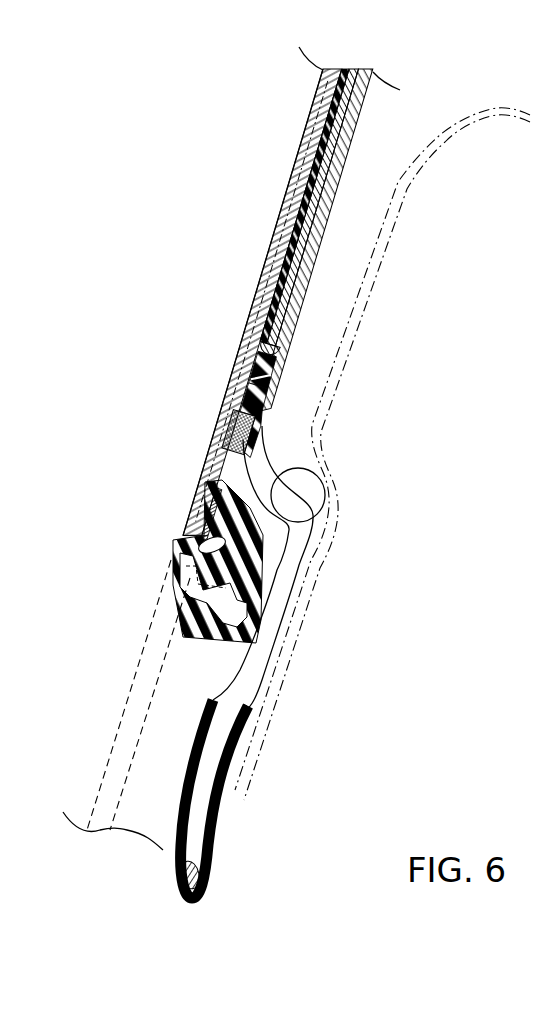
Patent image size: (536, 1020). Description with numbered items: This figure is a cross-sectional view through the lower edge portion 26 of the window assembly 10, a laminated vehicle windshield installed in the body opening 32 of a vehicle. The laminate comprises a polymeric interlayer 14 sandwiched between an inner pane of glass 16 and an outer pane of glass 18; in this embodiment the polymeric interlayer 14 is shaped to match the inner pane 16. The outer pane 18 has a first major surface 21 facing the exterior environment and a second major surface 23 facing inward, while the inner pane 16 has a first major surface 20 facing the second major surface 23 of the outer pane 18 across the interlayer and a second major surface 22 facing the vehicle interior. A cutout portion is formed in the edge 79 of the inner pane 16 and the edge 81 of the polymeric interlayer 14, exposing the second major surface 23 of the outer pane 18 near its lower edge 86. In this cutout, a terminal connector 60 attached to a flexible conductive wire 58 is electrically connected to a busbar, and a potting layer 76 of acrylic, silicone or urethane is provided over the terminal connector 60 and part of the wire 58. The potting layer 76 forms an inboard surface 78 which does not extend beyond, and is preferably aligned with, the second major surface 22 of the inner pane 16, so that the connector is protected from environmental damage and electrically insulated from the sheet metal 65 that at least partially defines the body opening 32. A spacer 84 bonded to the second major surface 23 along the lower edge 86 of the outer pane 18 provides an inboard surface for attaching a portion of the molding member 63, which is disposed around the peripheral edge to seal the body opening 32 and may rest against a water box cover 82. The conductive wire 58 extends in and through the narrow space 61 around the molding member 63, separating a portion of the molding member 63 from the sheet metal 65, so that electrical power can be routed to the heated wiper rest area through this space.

The window assembly 10 is at (120, 130).
The polymeric interlayer 14 is at (300, 234).
The inner pane of glass 16 is at (350, 149).
The outer pane of glass 18 is at (291, 170).
The first major surface of the inner pane 20 is at (348, 97).
The first major surface of the outer pane 21 is at (318, 88).
The second major surface of the inner pane 22 is at (357, 120).
The second major surface of the outer pane 23 is at (320, 140).
The lower edge portion 26 is at (250, 293).
The body opening 32 is at (275, 474).
The conductive wire 58 is at (324, 476).
The terminal connector 60 is at (252, 436).
The space 61 is at (345, 300).
The molding member 63 is at (203, 643).
The sheet metal 65 is at (378, 255).
The potting layer 76 is at (262, 393).
The inboard surface 78 is at (258, 413).
The edge of the inner pane 79 is at (270, 372).
The edge of the polymeric interlayer 81 is at (280, 340).
The water box cover 82 is at (120, 720).
The spacer 84 is at (267, 520).
The lower edge of the outer pane 86 is at (179, 535).